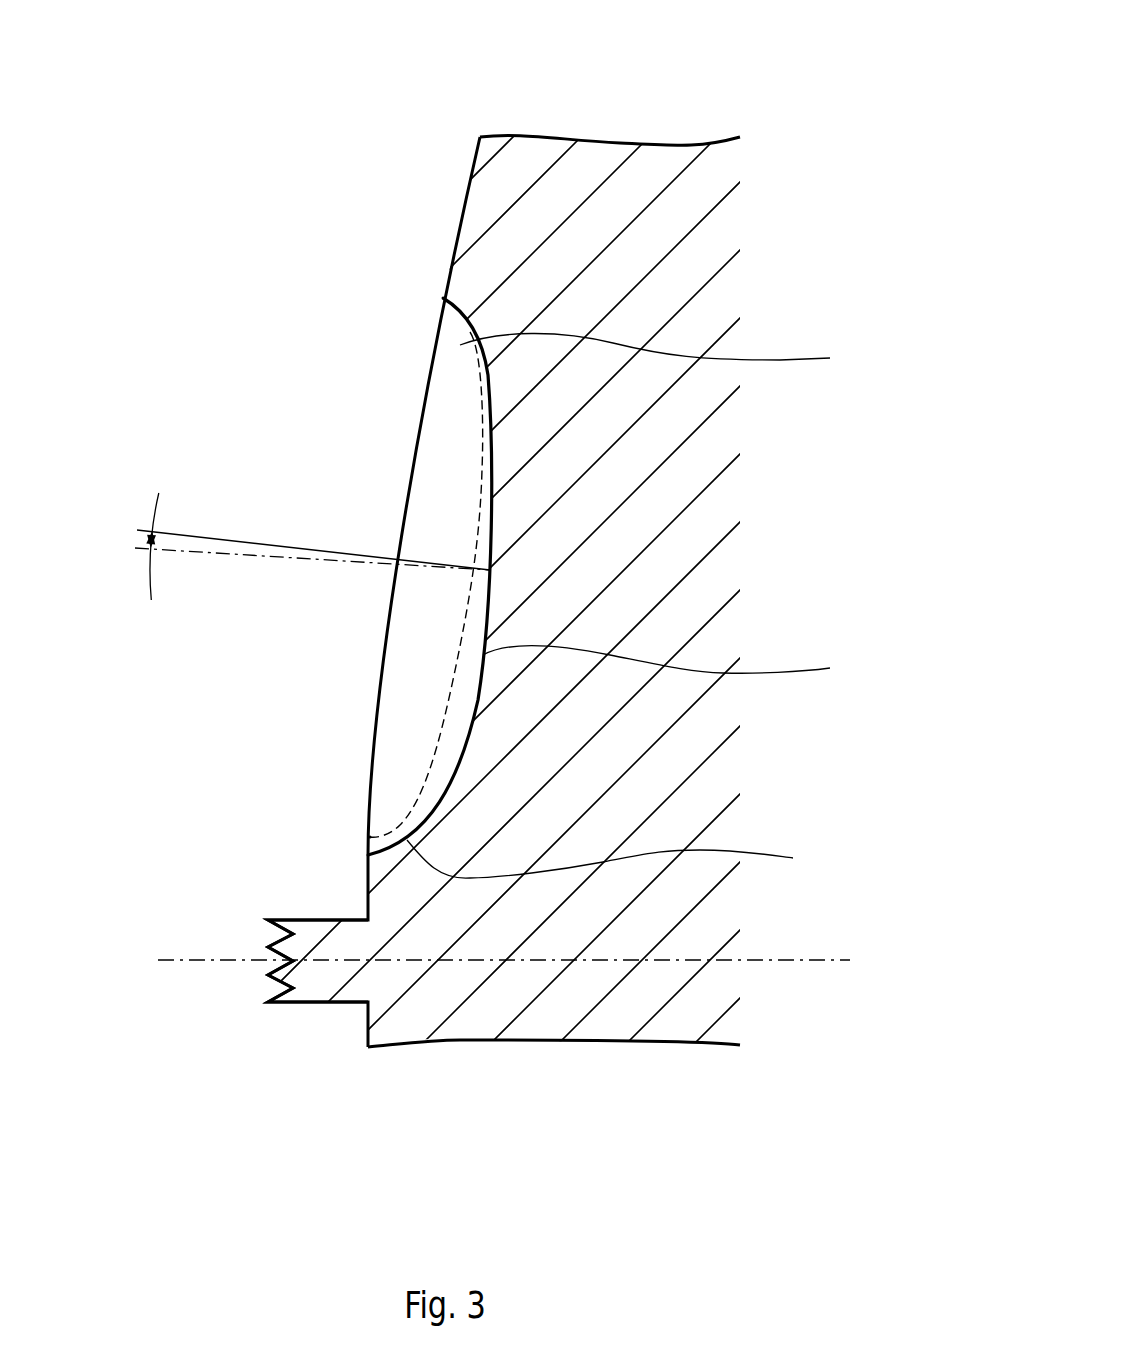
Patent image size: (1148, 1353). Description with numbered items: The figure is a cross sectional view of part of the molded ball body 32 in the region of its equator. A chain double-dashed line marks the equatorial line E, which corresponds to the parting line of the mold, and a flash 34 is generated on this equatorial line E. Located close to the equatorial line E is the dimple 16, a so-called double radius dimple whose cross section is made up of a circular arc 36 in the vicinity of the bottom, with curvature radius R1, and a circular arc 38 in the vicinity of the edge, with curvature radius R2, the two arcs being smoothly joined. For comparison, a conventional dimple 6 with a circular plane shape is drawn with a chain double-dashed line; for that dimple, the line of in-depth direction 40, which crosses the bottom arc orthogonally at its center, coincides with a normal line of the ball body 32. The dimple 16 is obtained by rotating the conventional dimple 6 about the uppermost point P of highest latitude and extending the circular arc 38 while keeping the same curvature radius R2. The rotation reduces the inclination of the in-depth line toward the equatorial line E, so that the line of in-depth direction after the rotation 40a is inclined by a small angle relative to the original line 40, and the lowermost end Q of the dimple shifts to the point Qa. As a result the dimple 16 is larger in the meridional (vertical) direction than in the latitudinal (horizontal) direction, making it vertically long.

The ball body 32 is at (537, 148).
The flash 34 is at (315, 987).
The circular arc in the vicinity of the bottom 36 is at (674, 667).
The circular arc in the vicinity of the edge 38 is at (636, 605).
The line of in-depth direction 40 is at (227, 542).
The line of in-depth direction after the rotation 40a is at (180, 553).
The dimple 16 is at (489, 527).
The conventional dimple 6 is at (443, 728).
The uppermost point P is at (443, 295).
The lowermost end Q is at (365, 836).
The shifted lowermost end Qa is at (365, 853).
The curvature radius of the bottom arc R1 is at (488, 613).
The curvature radius of the edge arc R2 is at (471, 328).
The equatorial line E is at (190, 962).